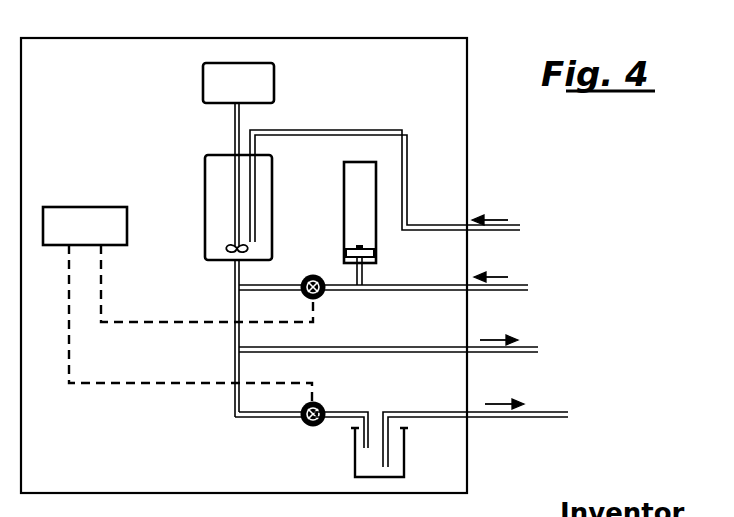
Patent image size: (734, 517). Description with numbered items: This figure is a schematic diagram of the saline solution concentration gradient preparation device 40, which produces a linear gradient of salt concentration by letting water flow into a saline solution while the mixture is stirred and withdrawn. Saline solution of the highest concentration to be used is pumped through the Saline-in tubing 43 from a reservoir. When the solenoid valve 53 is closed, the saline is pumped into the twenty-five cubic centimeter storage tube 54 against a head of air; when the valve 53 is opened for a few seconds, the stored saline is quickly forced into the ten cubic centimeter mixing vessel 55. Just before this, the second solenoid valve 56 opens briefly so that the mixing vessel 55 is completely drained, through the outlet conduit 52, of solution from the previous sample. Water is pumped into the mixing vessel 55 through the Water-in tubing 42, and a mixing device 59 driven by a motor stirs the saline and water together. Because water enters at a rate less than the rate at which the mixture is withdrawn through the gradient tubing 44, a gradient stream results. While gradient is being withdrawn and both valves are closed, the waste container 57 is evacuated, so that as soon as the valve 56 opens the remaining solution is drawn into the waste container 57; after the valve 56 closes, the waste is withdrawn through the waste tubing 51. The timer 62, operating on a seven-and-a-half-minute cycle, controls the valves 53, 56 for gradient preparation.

The gradient forming apparatus 40 is at (474, 198).
The Water-in tubing 42 is at (508, 232).
The Saline-in tubing 43 is at (512, 292).
The gradient tubing 44 is at (520, 355).
The waste tubing 51 is at (522, 420).
The outlet conduit from mixing vessel 52 is at (235, 362).
The solenoid valve 53 is at (315, 275).
The storage tube 54 is at (344, 187).
The mixing vessel 55 is at (212, 221).
The second solenoid valve 56 is at (302, 423).
The waste container 57 is at (352, 464).
The mixing device 59 is at (203, 79).
The timer 62 is at (73, 206).